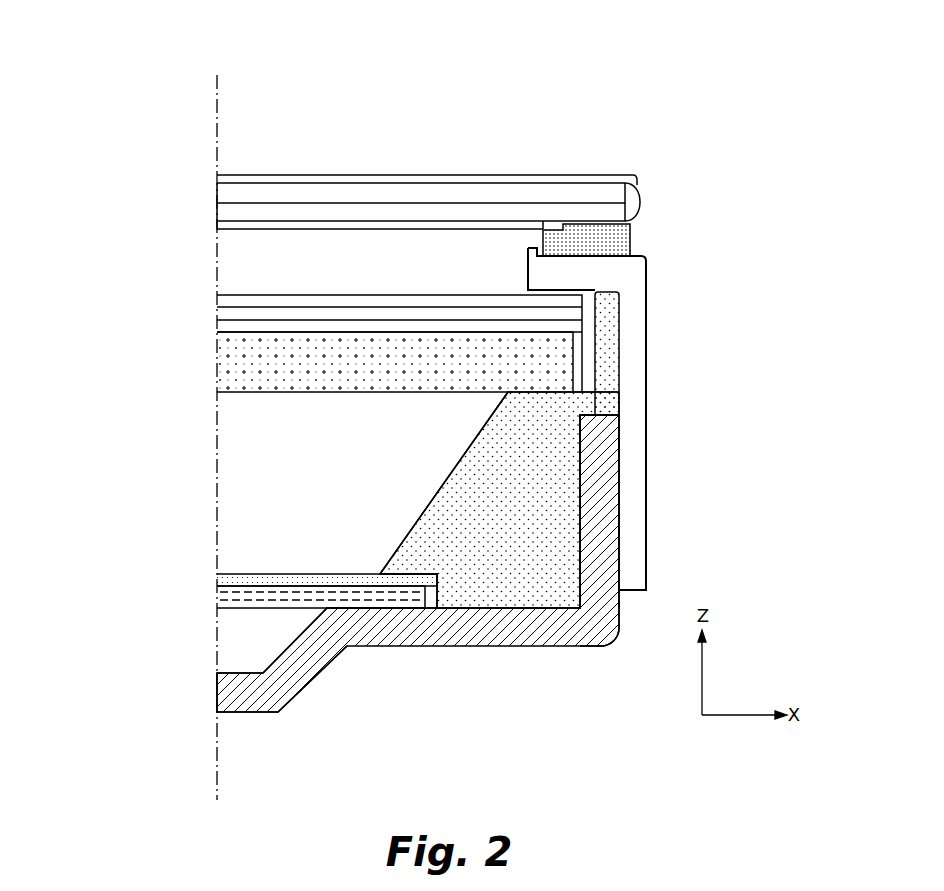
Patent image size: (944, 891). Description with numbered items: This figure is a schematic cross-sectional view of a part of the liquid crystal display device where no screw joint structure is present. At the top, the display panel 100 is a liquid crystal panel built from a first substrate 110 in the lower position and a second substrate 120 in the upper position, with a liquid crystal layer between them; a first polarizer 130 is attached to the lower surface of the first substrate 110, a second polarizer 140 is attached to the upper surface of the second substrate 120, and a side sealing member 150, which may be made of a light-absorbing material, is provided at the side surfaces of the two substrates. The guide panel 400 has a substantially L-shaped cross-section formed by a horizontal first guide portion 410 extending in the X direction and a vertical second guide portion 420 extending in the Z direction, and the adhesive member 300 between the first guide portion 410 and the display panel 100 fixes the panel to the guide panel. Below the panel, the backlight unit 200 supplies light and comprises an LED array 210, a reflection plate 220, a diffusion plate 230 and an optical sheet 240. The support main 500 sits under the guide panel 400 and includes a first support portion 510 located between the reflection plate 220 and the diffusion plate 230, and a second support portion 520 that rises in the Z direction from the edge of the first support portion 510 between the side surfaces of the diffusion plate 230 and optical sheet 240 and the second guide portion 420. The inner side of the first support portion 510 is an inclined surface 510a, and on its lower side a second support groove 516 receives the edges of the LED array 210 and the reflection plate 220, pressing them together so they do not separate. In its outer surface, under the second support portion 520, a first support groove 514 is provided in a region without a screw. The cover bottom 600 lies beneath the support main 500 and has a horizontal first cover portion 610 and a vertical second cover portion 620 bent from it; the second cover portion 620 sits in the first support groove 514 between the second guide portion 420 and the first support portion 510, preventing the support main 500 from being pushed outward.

The display panel 100 is at (464, 114).
The first substrate 110 is at (308, 212).
The second substrate 120 is at (395, 193).
The first polarizer 130 is at (439, 227).
The second polarizer 140 is at (503, 181).
The side sealing member 150 is at (637, 203).
The backlight unit 200 is at (330, 456).
The LED array 210 is at (271, 601).
The reflection plate 220 is at (215, 578).
The diffusion plate 230 is at (220, 357).
The optical sheet 240 is at (215, 295).
The adhesive member 300 is at (610, 240).
The guide panel 400 is at (677, 419).
The first guide portion 410 is at (598, 277).
The second guide portion 420 is at (632, 328).
The support main 500 is at (591, 549).
The first support portion 510 is at (546, 478).
The inclined surface 510a is at (470, 439).
The first support groove 514 is at (581, 509).
The second support groove 516 is at (420, 578).
The second support portion 520 is at (607, 355).
The cover bottom 600 is at (426, 609).
The first cover portion 610 is at (517, 630).
The second cover portion 620 is at (608, 591).